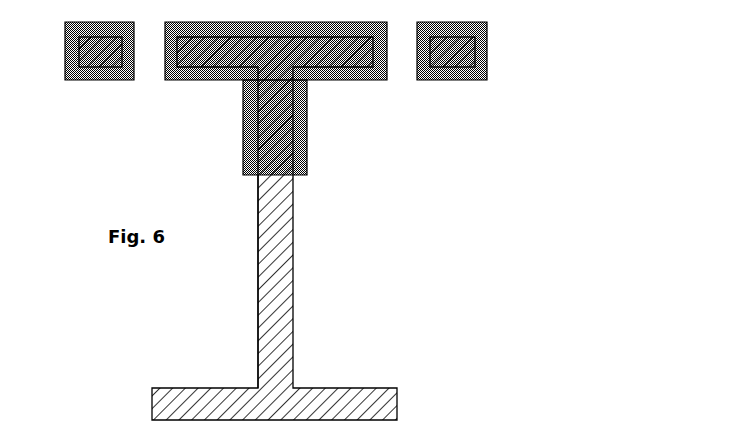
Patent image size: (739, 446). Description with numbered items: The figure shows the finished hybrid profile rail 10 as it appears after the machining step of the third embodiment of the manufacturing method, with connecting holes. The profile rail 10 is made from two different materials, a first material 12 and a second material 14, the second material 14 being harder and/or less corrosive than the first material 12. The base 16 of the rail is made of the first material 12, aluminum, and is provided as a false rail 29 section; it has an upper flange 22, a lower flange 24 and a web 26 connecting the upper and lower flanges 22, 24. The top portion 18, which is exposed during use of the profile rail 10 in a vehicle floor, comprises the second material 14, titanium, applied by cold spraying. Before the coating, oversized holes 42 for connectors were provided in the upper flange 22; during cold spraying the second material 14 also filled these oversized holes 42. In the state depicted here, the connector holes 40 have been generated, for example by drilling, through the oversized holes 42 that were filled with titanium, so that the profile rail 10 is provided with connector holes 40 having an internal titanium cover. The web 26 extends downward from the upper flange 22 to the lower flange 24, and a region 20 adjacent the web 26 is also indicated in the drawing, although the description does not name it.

The profile rail 10 is at (418, 263).
The first material 12 is at (292, 233).
The second material 14 is at (110, 80).
The base 16 is at (295, 307).
The top portion 18 is at (489, 56).
The web side surface 20 is at (258, 260).
The upper flange 22 is at (458, 80).
The lower flange 24 is at (398, 403).
The web 26 is at (258, 187).
The false rail 29 is at (470, 220).
The connector holes 40 is at (150, 65).
The oversized holes 42 is at (180, 82).